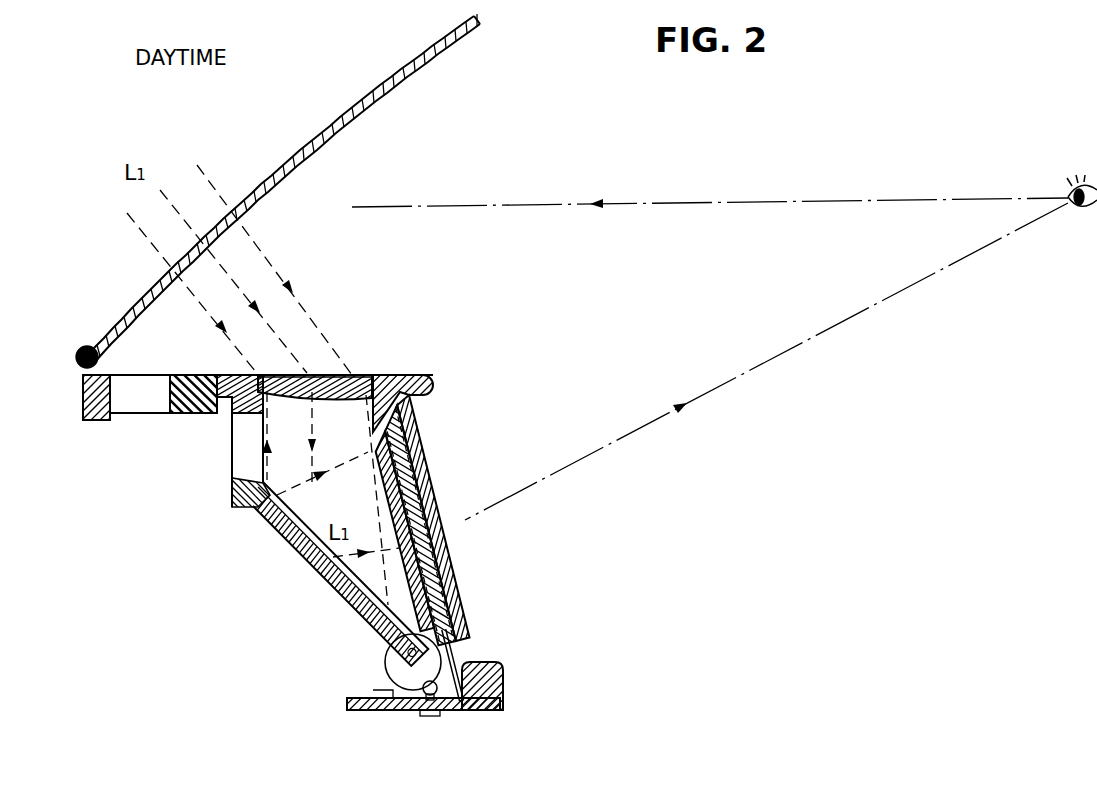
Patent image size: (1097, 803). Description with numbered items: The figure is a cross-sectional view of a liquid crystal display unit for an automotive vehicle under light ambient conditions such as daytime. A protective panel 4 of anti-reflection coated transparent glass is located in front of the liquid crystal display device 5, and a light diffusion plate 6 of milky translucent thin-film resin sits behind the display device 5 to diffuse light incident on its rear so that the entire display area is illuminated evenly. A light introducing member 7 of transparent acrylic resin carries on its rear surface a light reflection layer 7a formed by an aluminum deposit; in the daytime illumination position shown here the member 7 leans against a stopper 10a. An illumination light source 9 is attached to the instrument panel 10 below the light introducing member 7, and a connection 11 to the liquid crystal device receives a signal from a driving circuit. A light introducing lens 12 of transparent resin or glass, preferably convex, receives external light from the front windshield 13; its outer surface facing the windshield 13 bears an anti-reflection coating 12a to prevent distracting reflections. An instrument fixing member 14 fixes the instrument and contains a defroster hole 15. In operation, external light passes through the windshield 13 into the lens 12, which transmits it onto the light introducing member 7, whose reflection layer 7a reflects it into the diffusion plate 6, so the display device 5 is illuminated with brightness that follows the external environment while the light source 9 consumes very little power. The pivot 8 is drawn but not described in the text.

The protective panel 4 is at (423, 430).
The liquid crystal display device 5 is at (403, 493).
The light diffusion plate 6 is at (417, 568).
The light introducing member 7 is at (286, 525).
The light reflection layer 7a is at (325, 578).
The pivot shaft 8 is at (382, 656).
The illumination light source 9 is at (411, 712).
The instrument panel 10 is at (226, 375).
The stopper 10a is at (238, 508).
The connection 11 is at (468, 728).
The light introducing lens 12 is at (355, 377).
The anti-reflection coating 12a is at (333, 375).
The front windshield 13 is at (393, 84).
The instrument fixing member 14 is at (193, 413).
The defroster hole 15 is at (145, 403).